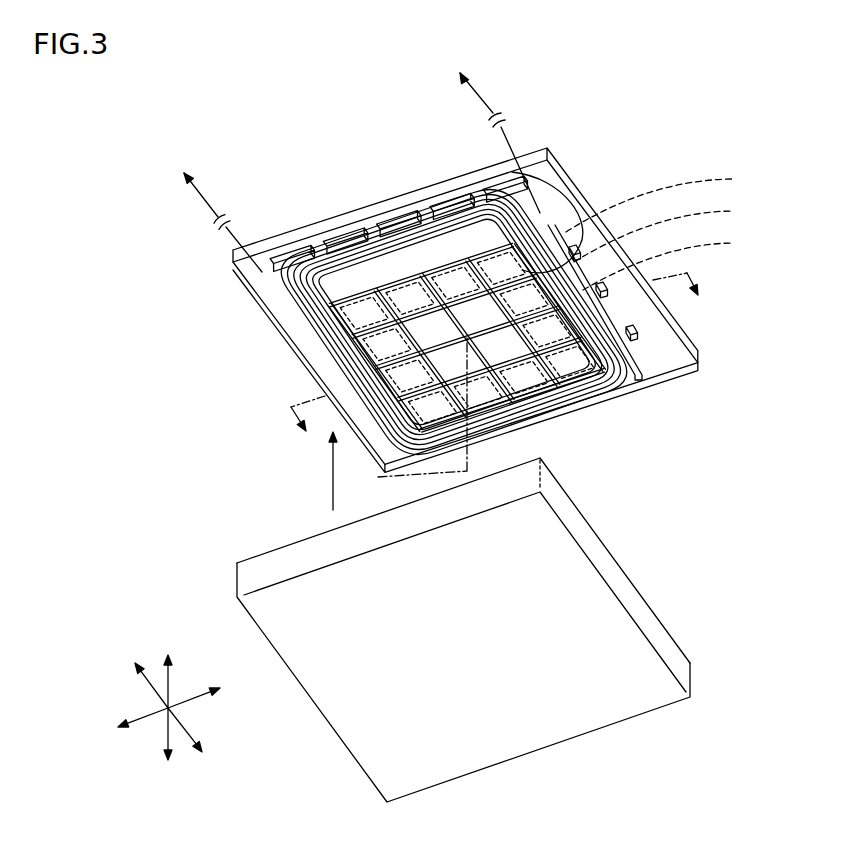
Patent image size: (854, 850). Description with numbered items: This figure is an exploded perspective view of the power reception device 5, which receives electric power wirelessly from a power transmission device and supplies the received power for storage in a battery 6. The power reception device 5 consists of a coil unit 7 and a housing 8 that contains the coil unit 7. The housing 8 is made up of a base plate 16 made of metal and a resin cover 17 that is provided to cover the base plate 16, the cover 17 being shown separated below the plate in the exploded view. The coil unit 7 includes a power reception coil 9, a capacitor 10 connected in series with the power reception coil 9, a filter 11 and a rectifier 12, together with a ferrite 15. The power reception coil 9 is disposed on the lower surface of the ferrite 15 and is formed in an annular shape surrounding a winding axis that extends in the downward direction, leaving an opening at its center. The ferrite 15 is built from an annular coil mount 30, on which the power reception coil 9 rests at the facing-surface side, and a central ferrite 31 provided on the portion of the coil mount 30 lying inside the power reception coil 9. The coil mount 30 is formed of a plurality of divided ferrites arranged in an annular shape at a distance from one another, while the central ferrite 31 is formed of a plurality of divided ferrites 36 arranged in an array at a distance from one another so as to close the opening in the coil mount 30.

The power reception device 5 is at (296, 164).
The battery 6 is at (355, 158).
The coil unit 7 is at (778, 165).
The housing 8 is at (751, 378).
The power reception coil 9 is at (592, 338).
The capacitor 10 is at (671, 260).
The filter 11 is at (663, 200).
The rectifier 12 is at (667, 231).
The ferrite 15 is at (612, 312).
The base plate 16 is at (672, 366).
The resin cover 17 is at (624, 569).
The coil mount 30 is at (298, 272).
The central ferrite 31 is at (336, 346).
The divided ferrites 36 is at (440, 355).